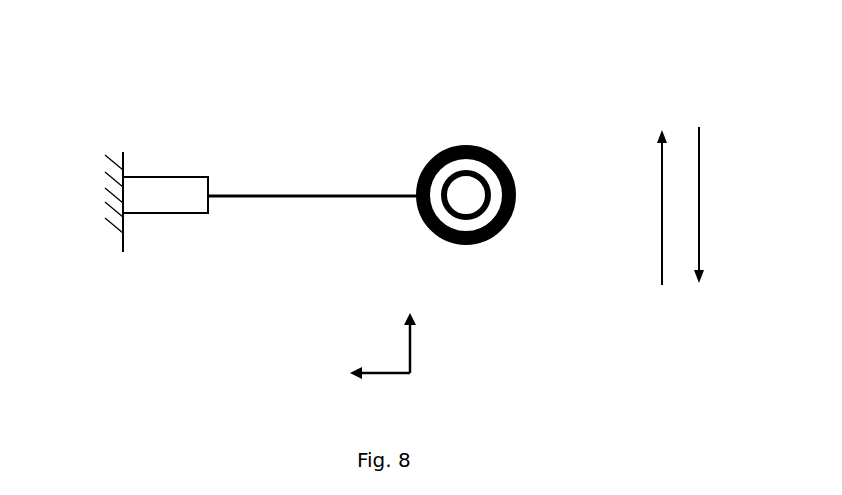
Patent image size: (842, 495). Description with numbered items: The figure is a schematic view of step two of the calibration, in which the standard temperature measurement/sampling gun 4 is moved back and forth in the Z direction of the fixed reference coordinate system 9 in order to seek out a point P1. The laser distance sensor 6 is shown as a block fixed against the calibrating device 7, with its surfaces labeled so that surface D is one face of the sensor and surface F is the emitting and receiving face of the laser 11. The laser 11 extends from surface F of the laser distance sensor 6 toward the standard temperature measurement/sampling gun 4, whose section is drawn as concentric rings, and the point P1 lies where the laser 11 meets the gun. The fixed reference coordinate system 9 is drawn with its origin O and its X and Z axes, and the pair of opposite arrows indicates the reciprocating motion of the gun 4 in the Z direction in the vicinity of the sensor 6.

The standard temperature measurement/sampling gun 4 is at (499, 145).
The laser distance sensor 6 is at (171, 168).
The calibrating device 7 is at (128, 250).
The fixed reference coordinate system 9 is at (418, 364).
The laser 11 is at (288, 212).
The surface F is at (216, 183).
The point P1 is at (408, 188).
The surface D is at (156, 203).